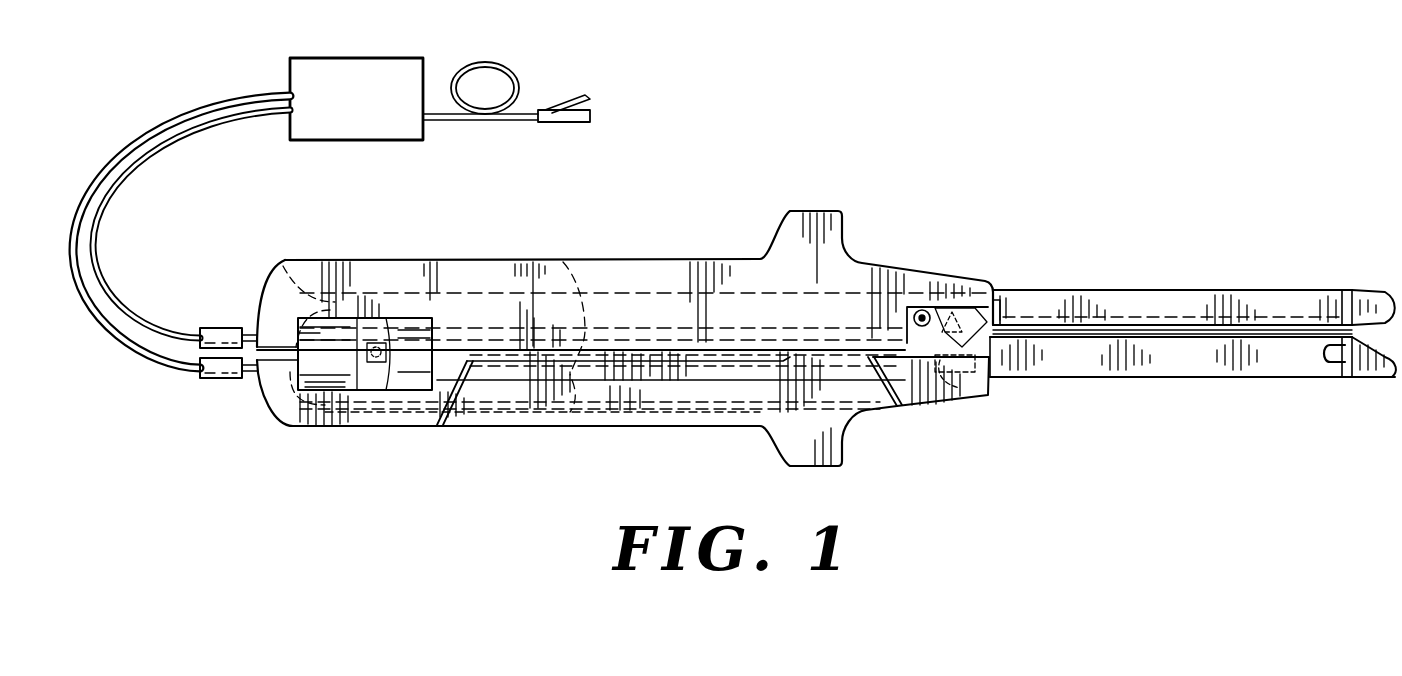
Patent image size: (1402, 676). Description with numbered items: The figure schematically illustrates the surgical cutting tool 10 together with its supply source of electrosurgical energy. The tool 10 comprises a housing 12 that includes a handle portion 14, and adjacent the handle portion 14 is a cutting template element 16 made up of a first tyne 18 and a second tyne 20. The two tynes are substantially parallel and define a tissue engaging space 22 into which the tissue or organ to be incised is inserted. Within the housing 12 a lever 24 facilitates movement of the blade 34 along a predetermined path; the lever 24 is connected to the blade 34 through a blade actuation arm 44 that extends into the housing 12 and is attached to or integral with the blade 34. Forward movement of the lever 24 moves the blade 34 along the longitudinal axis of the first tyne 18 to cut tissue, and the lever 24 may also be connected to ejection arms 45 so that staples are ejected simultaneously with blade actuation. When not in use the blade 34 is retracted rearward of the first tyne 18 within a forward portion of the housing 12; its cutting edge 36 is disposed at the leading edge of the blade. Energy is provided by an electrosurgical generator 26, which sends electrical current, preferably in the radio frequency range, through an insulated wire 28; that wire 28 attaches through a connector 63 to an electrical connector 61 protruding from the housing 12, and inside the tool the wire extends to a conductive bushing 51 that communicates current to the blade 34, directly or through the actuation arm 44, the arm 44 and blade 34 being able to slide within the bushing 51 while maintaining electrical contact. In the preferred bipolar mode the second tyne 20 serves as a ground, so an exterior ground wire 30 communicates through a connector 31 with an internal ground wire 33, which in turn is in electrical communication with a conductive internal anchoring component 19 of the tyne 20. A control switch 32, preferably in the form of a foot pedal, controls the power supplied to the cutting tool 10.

The surgical cutting tool 10 is at (605, 214).
The housing 12 is at (453, 256).
The handle portion 14 is at (356, 270).
The cutting template element 16 is at (1196, 284).
The first tyne 18 is at (1168, 360).
The conductive internal anchoring component 19 is at (660, 300).
The second tyne 20 is at (1048, 304).
The tissue engaging space 22 is at (1268, 326).
The lever 24 is at (378, 391).
The electrosurgical generator 26 is at (362, 107).
The insulated wire 28 is at (238, 100).
The insulated ground wire 30 is at (196, 140).
The connector 31 is at (252, 332).
The control switch 32 is at (578, 122).
The internal ground wire 33 is at (283, 264).
The blade 34 is at (960, 282).
The cutting edge 36 is at (1003, 286).
The blade actuation arm 44 is at (561, 257).
The ejection arms 45 is at (572, 412).
The conductive bushing 51 is at (960, 390).
The electrical connector 61 is at (226, 394).
The connector 63 is at (208, 372).